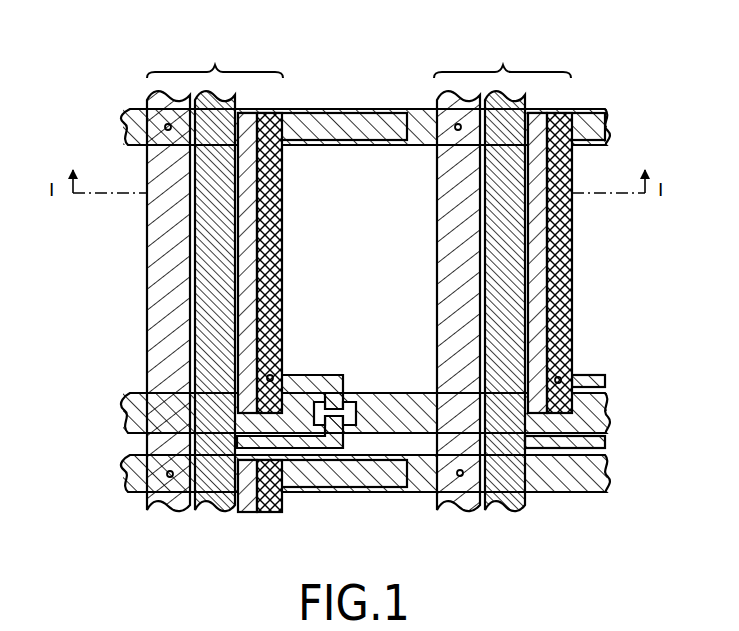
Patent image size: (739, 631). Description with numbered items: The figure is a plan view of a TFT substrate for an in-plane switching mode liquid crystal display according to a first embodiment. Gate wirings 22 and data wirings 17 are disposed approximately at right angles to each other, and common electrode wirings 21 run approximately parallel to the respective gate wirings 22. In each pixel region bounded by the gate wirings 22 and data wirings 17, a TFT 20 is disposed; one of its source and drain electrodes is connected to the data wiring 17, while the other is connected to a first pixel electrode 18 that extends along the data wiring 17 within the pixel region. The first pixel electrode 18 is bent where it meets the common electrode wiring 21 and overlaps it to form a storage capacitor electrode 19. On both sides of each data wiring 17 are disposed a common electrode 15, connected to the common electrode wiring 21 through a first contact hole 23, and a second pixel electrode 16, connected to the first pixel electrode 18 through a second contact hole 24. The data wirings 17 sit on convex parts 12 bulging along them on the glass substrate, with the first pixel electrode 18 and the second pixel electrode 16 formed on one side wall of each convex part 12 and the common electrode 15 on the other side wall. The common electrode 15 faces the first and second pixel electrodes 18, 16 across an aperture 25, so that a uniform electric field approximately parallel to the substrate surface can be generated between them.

The convex part 12 is at (359, 55).
The common electrode 15 is at (166, 510).
The second pixel electrode 16 is at (265, 302).
The data wiring 17 is at (216, 512).
The first pixel electrode 18 is at (560, 250).
The storage capacitor electrode 19 is at (357, 112).
The TFT 20 is at (350, 424).
The common electrode wiring 21 is at (130, 128).
The gate wiring 22 is at (130, 412).
The first contact hole 23 is at (147, 493).
The second contact hole 24 is at (283, 385).
The aperture 25 is at (325, 283).